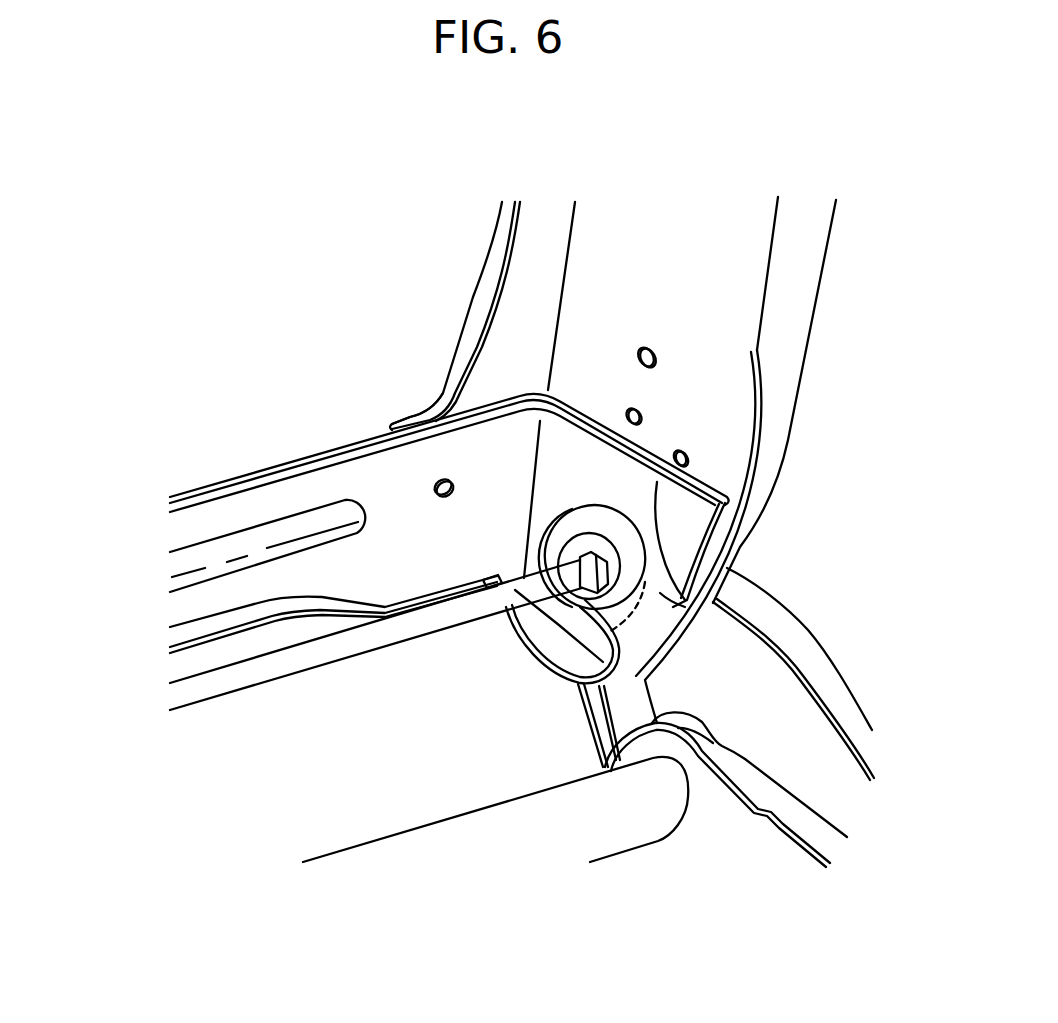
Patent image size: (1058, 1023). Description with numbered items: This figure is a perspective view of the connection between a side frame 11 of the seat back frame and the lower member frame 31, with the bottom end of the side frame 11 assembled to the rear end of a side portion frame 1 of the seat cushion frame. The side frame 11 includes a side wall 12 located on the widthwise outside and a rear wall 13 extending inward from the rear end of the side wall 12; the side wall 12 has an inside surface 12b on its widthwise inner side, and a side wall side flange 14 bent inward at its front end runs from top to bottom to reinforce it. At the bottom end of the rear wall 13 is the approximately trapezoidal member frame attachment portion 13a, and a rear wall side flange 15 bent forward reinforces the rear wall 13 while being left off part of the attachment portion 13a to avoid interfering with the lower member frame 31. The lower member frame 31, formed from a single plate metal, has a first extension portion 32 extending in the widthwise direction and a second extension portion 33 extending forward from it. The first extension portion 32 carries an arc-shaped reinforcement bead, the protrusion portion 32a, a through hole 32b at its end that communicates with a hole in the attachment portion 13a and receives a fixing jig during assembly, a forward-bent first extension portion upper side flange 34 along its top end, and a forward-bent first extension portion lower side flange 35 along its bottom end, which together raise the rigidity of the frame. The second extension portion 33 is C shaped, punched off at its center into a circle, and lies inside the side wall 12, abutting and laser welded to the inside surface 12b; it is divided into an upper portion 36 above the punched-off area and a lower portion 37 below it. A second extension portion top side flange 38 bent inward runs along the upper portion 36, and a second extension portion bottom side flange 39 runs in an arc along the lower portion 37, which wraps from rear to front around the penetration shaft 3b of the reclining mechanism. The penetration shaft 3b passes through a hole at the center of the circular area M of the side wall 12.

The side portion frame 1 is at (832, 688).
The penetration shaft 3b is at (262, 668).
The side frame 11 is at (861, 222).
The side wall 12 is at (725, 388).
The inside surface 12b is at (671, 232).
The rear wall 13 is at (535, 253).
The member frame attachment portion 13a is at (418, 415).
The side wall side flange 14 is at (787, 305).
The rear wall side flange 15 is at (472, 327).
The lower member frame 31 is at (318, 424).
The first extension portion 32 is at (227, 517).
The protrusion portion 32a is at (190, 557).
The through hole 32b is at (452, 490).
The second extension portion 33 is at (670, 429).
The first extension portion upper side flange 34 is at (262, 480).
The first extension portion lower side flange 35 is at (313, 607).
The upper portion 36 is at (640, 490).
The lower portion 37 is at (583, 643).
The second extension portion top side flange 38 is at (620, 443).
The second extension portion bottom side flange 39 is at (540, 638).
The circular area M is at (640, 600).